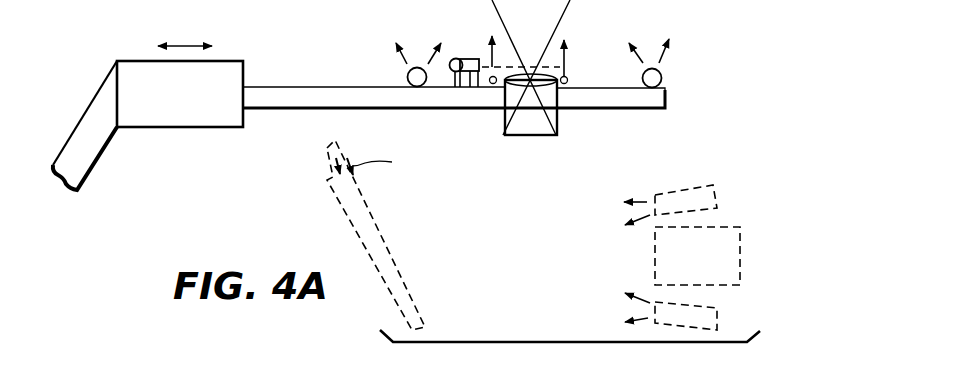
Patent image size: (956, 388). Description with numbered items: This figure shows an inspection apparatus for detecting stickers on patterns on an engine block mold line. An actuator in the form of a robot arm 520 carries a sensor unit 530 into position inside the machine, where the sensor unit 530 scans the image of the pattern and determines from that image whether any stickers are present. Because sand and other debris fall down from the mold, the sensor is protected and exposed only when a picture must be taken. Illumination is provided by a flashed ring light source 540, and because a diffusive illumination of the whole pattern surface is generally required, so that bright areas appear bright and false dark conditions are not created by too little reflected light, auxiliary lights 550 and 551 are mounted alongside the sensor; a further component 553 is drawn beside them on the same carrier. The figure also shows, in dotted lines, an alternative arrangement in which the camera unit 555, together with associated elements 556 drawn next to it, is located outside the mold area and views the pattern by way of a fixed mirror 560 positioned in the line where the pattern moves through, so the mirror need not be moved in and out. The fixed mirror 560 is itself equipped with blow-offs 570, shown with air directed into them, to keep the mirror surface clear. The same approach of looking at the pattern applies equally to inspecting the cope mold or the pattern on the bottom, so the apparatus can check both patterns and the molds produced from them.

The robot arm 520 is at (198, 103).
The sensor unit 530 is at (530, 137).
The flashed ring light source 540 is at (569, 79).
The auxiliary light 550 is at (661, 79).
The auxiliary light 551 is at (408, 79).
The sensor head 553 is at (470, 58).
The camera unit 555 is at (740, 253).
The separated pieces 556 is at (717, 195).
The fixed mirror 560 is at (430, 332).
The blow-offs 570 is at (327, 148).